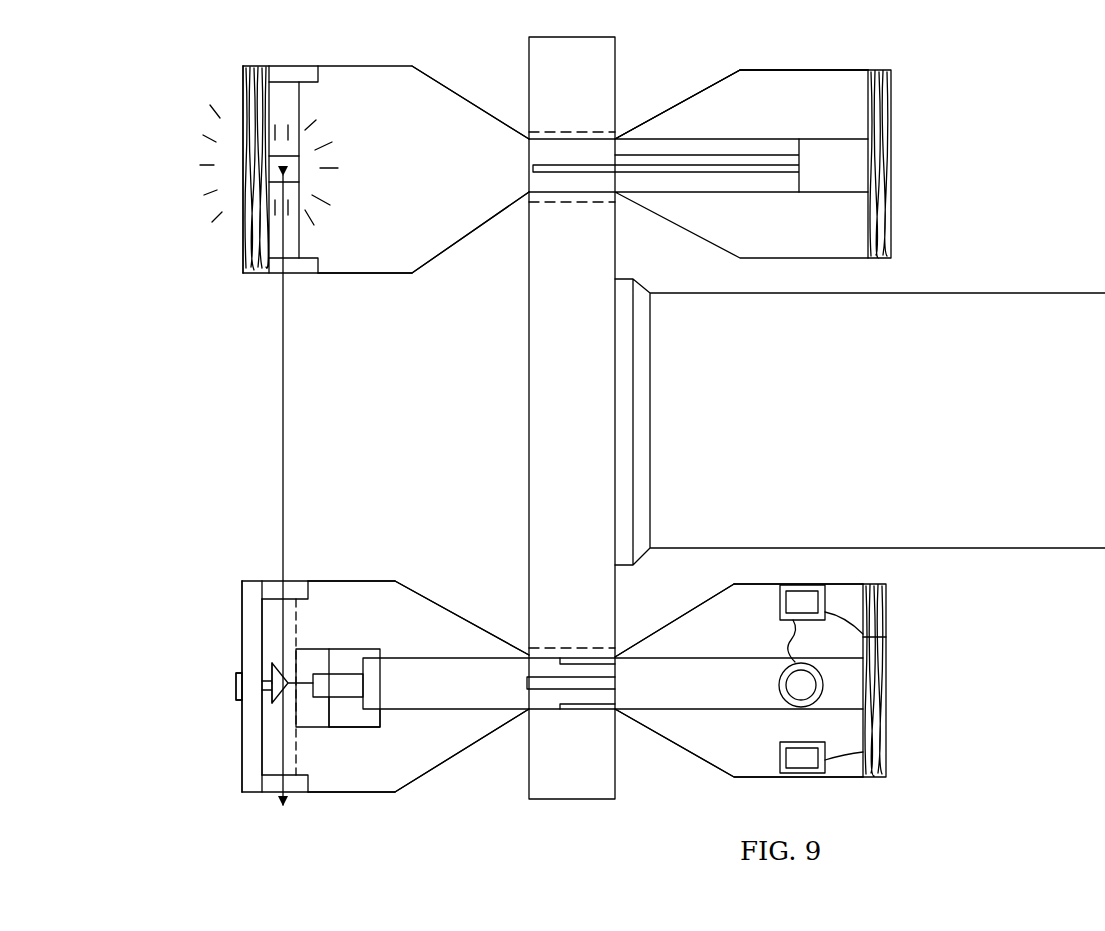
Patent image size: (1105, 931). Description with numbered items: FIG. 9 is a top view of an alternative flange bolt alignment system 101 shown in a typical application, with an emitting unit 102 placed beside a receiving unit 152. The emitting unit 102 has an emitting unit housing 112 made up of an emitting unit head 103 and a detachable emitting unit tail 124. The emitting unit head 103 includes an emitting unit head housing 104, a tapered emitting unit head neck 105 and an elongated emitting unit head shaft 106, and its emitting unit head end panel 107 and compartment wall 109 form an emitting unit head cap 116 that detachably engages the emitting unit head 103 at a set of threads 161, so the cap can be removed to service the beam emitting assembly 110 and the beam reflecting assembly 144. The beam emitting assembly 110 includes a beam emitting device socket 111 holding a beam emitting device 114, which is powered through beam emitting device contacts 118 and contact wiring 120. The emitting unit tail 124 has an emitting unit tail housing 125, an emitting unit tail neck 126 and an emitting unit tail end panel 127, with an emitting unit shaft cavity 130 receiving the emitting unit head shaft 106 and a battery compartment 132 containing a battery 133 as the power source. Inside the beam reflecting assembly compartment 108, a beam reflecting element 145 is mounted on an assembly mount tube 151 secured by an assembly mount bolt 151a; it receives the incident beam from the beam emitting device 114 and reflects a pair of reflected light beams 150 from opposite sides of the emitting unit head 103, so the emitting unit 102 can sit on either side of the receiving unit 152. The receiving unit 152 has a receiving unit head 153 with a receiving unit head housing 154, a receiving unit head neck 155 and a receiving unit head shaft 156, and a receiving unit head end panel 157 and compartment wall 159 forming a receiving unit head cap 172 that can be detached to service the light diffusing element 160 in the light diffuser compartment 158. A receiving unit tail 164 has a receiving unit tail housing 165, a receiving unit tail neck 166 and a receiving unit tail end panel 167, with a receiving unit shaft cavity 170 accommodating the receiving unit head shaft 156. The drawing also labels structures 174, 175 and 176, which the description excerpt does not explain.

The flange bolt alignment system 101 is at (982, 110).
The emitting unit 102 is at (394, 566).
The emitting unit head 103 is at (380, 796).
The emitting unit head housing 104 is at (335, 578).
The emitting unit head neck 105 is at (496, 737).
The emitting unit head shaft 106 is at (530, 650).
The emitting unit head end panel 107 is at (245, 593).
The beam reflecting assembly compartment 108 is at (291, 598).
The compartment wall 109 is at (268, 582).
The beam emitting assembly 110 is at (354, 645).
The beam emitting device socket 111 is at (344, 719).
The emitting unit housing 112 is at (437, 575).
The beam emitting device 114 is at (355, 684).
The emitting unit head cap 116 is at (245, 760).
The beam emitting device contacts 118 is at (615, 700).
The contact wiring 120 is at (510, 704).
The emitting unit tail 124 is at (866, 580).
The emitting unit tail housing 125 is at (772, 584).
The emitting unit tail neck 126 is at (698, 606).
The emitting unit tail end panel 127 is at (891, 616).
The emitting unit shaft cavity 130 is at (738, 708).
The battery compartment 132 is at (863, 635).
The battery 133 is at (799, 638).
The beam reflecting assembly 144 is at (270, 650).
The beam reflecting element 145 is at (275, 714).
The reflected light beams 150 is at (283, 390).
The assembly mount tube 151 is at (269, 702).
The assembly mount bolt 151a is at (241, 679).
The receiving unit 152 is at (452, 78).
The receiving unit head 153 is at (480, 230).
The receiving unit head housing 154 is at (350, 278).
The receiving unit head neck 155 is at (466, 108).
The receiving unit head shaft 156 is at (589, 202).
The receiving unit head end panel 157 is at (247, 263).
The light diffuser compartment 158 is at (300, 110).
The compartment wall 159 is at (297, 269).
The light diffusing element 160 is at (300, 166).
The threads 161 is at (311, 606).
The receiving unit tail 164 is at (864, 65).
The receiving unit tail housing 165 is at (800, 70).
The receiving unit tail neck 166 is at (728, 72).
The receiving unit tail end panel 167 is at (893, 79).
The receiving unit shaft cavity 170 is at (732, 147).
The receiving unit head cap 172 is at (250, 235).
The frame member 174 is at (951, 294).
The central column 175 is at (603, 70).
The upper interface line 176 is at (592, 129).